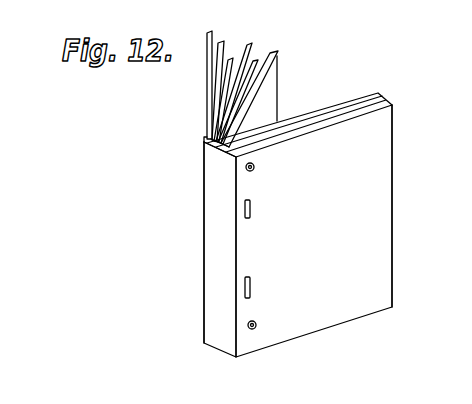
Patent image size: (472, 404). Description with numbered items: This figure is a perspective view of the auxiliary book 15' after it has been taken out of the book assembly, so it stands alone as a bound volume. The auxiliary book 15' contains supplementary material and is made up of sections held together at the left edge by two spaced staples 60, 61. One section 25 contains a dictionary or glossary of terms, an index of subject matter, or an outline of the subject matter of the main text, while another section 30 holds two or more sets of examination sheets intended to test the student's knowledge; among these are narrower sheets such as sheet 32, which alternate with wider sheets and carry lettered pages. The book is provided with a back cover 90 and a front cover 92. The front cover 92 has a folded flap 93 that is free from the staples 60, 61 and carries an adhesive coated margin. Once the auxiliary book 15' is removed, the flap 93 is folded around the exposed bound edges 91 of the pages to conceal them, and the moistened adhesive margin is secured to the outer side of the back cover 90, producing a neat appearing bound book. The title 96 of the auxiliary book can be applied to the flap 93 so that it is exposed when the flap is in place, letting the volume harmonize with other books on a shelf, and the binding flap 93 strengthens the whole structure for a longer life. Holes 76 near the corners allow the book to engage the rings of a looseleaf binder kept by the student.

The auxiliary book 15' is at (261, 231).
The front cover 92 is at (378, 139).
The title 96 is at (226, 228).
The section 25 is at (352, 100).
The back cover 90 is at (207, 84).
The section 30 is at (259, 46).
The narrower sheet 32 is at (278, 72).
The folded flap 93 is at (204, 137).
The exposed bound edges 91 is at (218, 148).
The staple 60 is at (244, 208).
The staple 61 is at (245, 290).
The hole 76 is at (252, 330).